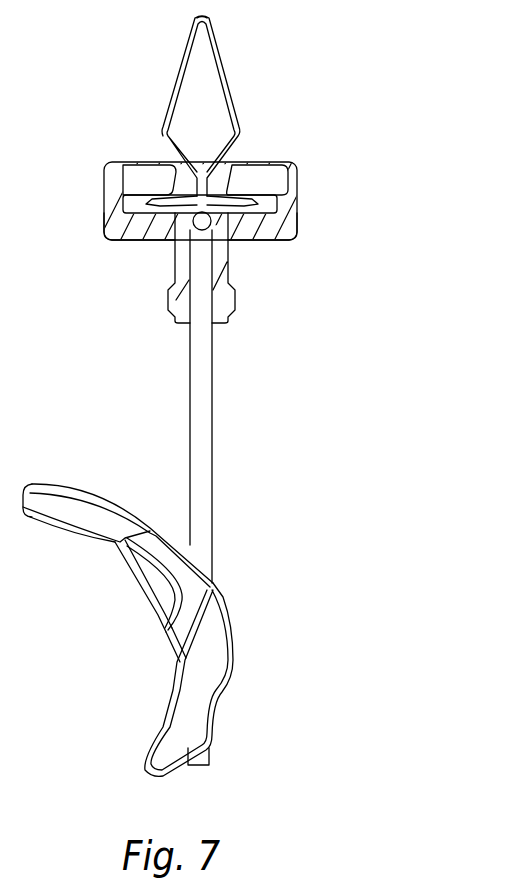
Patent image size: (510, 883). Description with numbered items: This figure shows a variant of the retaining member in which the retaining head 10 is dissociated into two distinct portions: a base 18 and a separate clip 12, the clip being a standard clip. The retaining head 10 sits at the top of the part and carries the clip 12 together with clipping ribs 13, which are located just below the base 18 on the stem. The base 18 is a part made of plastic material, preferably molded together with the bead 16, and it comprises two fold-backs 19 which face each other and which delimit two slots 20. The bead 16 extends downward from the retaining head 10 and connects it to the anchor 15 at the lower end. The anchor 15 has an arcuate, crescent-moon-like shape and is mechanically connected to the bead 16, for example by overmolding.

The retaining head 10 is at (327, 13).
The clip 12 is at (232, 90).
The clipping ribs 13 is at (180, 297).
The anchor 15 is at (213, 645).
The bead 16 is at (200, 415).
The base 18 is at (120, 208).
The fold-backs 19 is at (135, 178).
The slots 20 is at (138, 228).